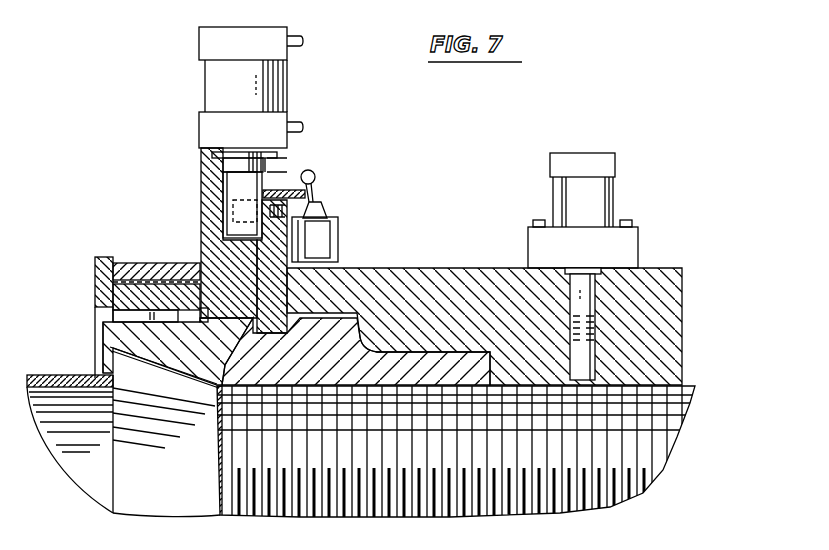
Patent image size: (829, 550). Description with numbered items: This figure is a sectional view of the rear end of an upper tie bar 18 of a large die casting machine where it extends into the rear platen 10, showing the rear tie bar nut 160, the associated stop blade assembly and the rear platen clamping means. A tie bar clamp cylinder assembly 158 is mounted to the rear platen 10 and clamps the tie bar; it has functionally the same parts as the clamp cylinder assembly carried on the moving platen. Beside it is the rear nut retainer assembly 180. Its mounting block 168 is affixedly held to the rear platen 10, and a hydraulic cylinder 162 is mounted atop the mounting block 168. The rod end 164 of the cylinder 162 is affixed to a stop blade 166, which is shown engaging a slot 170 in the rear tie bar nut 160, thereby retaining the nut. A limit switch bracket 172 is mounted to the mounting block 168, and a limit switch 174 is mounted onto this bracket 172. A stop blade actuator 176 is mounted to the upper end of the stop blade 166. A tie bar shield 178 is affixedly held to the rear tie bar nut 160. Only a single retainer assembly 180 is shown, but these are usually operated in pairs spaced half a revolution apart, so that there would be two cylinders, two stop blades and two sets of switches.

The rear platen 10 is at (453, 283).
The upper tie bar 18 is at (655, 459).
The cylinder assembly 158 is at (587, 158).
The rear tie bar nut 160 is at (368, 325).
The hydraulic cylinder 162 is at (216, 72).
The rod end 164 is at (237, 183).
The stop blade 166 is at (268, 253).
The mounting block 168 is at (210, 212).
The slot 170 is at (220, 383).
The limit switch bracket 172 is at (338, 245).
The limit switch 174 is at (317, 230).
The stop blade actuator 176 is at (292, 187).
The tie bar shield 178 is at (60, 377).
The rear nut retainer assembly 180 is at (322, 62).